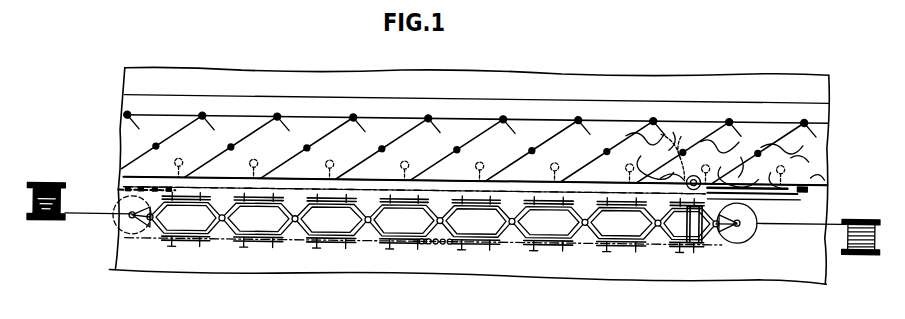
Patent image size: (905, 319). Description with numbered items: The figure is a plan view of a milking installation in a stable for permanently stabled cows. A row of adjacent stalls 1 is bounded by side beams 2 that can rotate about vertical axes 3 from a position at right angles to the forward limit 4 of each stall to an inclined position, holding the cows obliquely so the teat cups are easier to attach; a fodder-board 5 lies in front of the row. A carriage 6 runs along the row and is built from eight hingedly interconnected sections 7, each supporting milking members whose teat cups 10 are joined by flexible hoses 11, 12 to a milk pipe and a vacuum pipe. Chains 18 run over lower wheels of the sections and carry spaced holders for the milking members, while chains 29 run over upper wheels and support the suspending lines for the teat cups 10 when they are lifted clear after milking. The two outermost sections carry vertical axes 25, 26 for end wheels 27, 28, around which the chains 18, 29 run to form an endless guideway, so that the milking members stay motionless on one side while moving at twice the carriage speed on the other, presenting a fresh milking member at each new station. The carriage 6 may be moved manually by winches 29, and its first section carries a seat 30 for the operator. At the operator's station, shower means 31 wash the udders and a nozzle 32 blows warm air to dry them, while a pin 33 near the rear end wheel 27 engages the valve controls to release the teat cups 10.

The stalls 1 is at (283, 155).
The side beams 2 is at (321, 146).
The vertical axes 3 is at (385, 142).
The forward limit 4 is at (305, 109).
The fodder-board 5 is at (276, 74).
The carriage 6 is at (421, 250).
The sections 7 is at (269, 236).
The teat cups 10 is at (184, 157).
The flexible hose 11 is at (181, 189).
The flexible hose 12 is at (433, 193).
The chains 18 is at (447, 245).
The vertical axis 25 is at (135, 219).
The vertical axis 26 is at (735, 228).
The end wheel 27 is at (118, 228).
The end wheel 28 is at (756, 231).
The chains 29 is at (47, 222).
The seat 30 is at (686, 203).
The shower means 31 is at (803, 200).
The nozzle 32 is at (758, 192).
The pin 33 is at (118, 197).